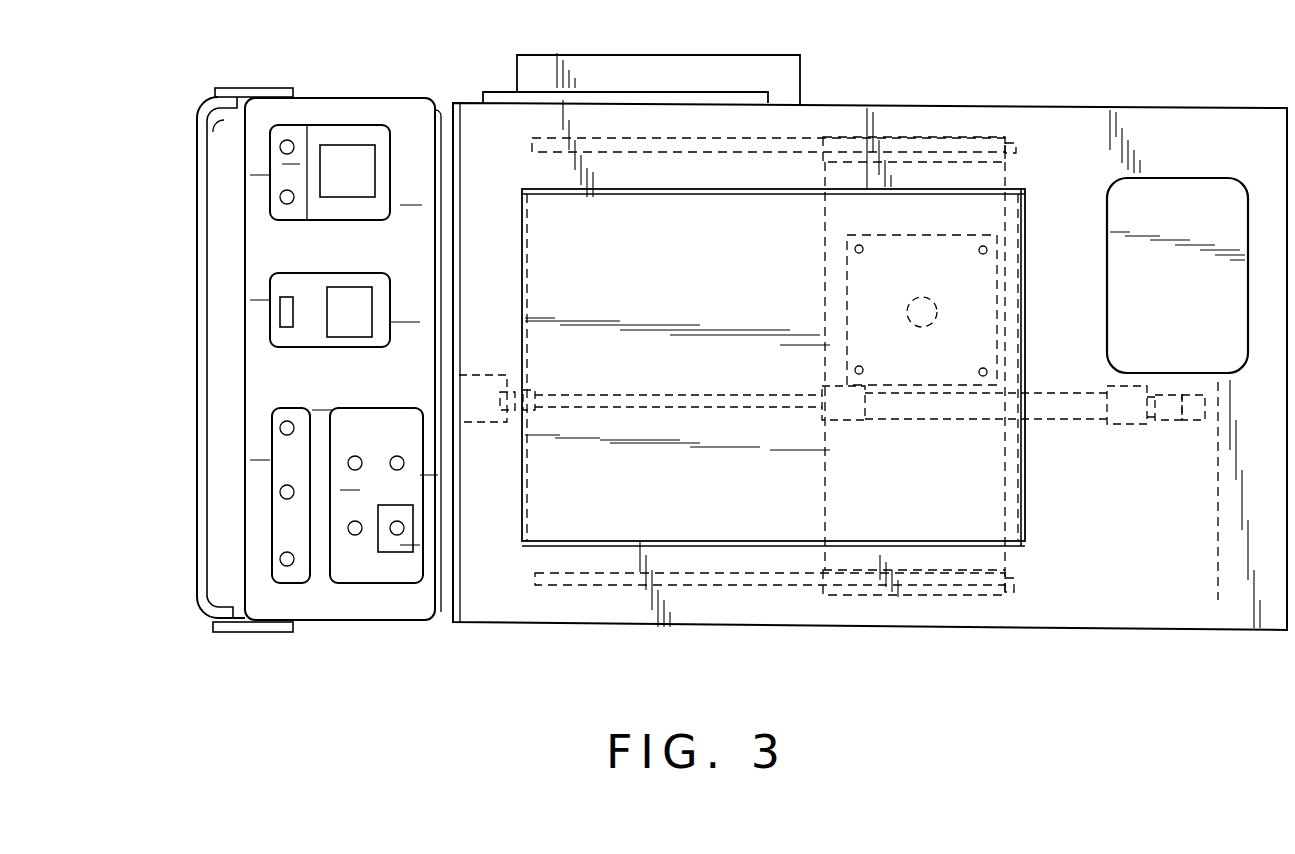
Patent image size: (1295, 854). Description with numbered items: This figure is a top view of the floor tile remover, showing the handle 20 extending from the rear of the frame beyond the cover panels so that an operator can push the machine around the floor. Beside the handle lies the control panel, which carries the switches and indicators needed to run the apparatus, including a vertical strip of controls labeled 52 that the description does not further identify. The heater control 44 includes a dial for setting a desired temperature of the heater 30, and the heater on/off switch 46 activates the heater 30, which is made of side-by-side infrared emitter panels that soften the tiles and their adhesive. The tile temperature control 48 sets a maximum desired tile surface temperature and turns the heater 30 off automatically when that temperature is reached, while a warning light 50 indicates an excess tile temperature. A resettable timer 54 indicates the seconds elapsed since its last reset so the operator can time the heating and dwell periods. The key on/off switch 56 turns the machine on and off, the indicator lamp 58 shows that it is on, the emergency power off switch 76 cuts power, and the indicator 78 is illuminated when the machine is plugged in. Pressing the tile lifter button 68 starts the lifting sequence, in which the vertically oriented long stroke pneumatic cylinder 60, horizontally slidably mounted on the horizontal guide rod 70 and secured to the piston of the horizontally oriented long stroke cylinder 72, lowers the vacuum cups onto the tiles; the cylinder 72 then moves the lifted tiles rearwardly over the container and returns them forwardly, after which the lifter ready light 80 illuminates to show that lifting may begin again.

The handle 20 is at (202, 600).
The heater 30 is at (803, 73).
The heater control 44 is at (374, 308).
The heater on/off switch 46 is at (292, 141).
The tile temperature control 48 is at (358, 145).
The warning light 50 is at (287, 204).
The control strip 52 is at (287, 421).
The resettable timer 54 is at (295, 311).
The key on/off switch 56 is at (404, 464).
The indicator lamp 58 is at (355, 456).
The long stroke pneumatic cylinder 60 is at (930, 298).
The tile lifter button 68 is at (292, 565).
The horizontal guide rod 70 is at (1012, 145).
The horizontally oriented long stroke cylinder 72 is at (1126, 410).
The emergency power off switch 76 is at (404, 529).
The indicator 78 is at (357, 535).
The lifter ready light 80 is at (280, 492).